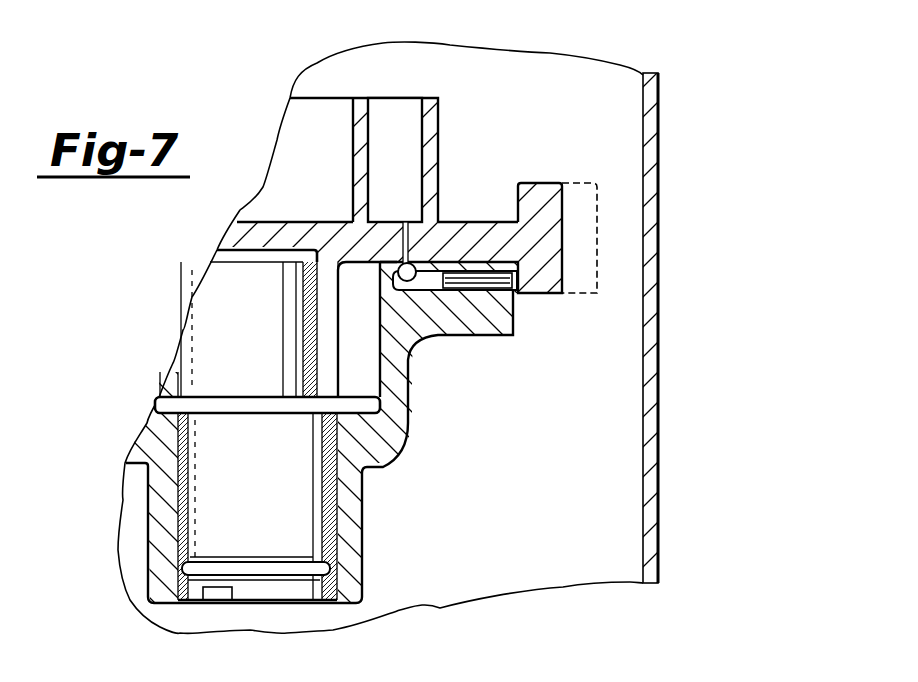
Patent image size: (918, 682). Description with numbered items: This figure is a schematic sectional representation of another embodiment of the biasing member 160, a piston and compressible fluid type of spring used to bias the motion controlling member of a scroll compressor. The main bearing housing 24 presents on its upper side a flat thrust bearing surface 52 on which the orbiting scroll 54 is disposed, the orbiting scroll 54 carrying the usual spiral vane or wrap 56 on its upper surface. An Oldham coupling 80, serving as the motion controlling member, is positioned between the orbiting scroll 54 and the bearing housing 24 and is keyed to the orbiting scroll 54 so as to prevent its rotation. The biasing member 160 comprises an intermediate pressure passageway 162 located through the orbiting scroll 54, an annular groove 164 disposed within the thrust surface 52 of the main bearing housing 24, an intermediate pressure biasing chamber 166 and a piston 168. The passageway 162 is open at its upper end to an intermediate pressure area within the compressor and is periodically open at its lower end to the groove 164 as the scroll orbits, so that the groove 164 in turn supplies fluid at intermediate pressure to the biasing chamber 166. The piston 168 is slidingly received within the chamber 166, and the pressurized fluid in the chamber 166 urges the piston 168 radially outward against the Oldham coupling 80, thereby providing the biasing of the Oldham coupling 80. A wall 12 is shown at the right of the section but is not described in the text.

The wall panel 12 is at (650, 125).
The main bearing housing 24 is at (163, 530).
The thrust bearing surface 52 is at (545, 244).
The orbiting scroll 54 is at (465, 247).
The spiral vane or wrap 56 is at (432, 120).
The Oldham coupling 80 is at (565, 263).
The biasing member 160 is at (449, 149).
The intermediate pressure passageway 162 is at (400, 243).
The annular groove 164 is at (398, 268).
The intermediate pressure biasing chamber 166 is at (427, 282).
The piston 168 is at (487, 281).